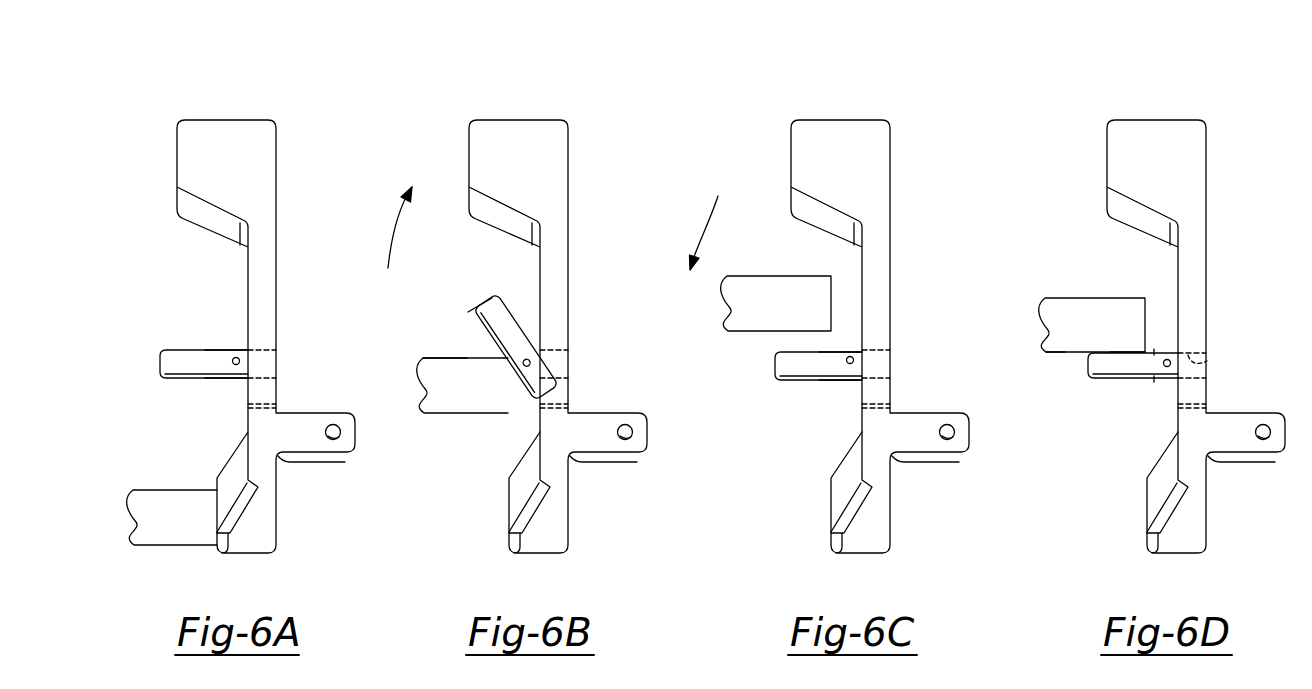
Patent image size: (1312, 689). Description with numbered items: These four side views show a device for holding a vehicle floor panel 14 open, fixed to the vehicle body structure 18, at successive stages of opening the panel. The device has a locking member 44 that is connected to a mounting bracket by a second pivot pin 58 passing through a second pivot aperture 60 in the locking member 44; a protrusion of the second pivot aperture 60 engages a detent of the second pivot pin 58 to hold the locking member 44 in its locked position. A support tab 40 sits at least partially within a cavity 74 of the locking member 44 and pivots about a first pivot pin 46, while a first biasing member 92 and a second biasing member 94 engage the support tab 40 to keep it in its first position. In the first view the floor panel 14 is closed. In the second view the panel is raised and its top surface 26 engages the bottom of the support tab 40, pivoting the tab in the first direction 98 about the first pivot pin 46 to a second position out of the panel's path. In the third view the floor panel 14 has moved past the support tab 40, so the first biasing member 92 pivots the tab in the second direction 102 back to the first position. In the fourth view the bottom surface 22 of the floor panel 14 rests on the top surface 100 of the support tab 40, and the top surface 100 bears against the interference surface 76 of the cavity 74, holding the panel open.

In FIG. 6A, the floor panel 14 is at (162, 500).
In FIG. 6B, the floor panel 14 is at (428, 379).
In FIG. 6C, the floor panel 14 is at (747, 303).
In FIG. 6D, the floor panel 14 is at (1064, 325).
In FIG. 6B, the body structure 18 is at (456, 278).
In FIG. 6D, the bottom surface 22 is at (1048, 410).
In FIG. 6B, the top surface 26 is at (439, 325).
In FIG. 6A, the support tab 40 is at (163, 366).
In FIG. 6B, the support tab 40 is at (541, 337).
In FIG. 6C, the support tab 40 is at (782, 363).
In FIG. 6D, the support tab 40 is at (1133, 429).
In FIG. 6A, the locking member 44 is at (227, 127).
In FIG. 6B, the locking member 44 is at (558, 298).
In FIG. 6C, the locking member 44 is at (880, 298).
In FIG. 6D, the locking member 44 is at (1196, 298).
In FIG. 6C, the first pivot pin 46 is at (887, 315).
In FIG. 6A, the second pivot pin 58 is at (340, 425).
In FIG. 6B, the second pivot pin 58 is at (654, 420).
In FIG. 6C, the second pivot pin 58 is at (976, 420).
In FIG. 6D, the second pivot pin 58 is at (1254, 400).
In FIG. 6A, the second pivot aperture 60 is at (338, 441).
In FIG. 6B, the second pivot aperture 60 is at (654, 468).
In FIG. 6C, the second pivot aperture 60 is at (976, 468).
In FIG. 6D, the second pivot aperture 60 is at (1276, 478).
In FIG. 6D, the cavity 74 is at (1158, 411).
In FIG. 6D, the interference surface 76 is at (1232, 347).
In FIG. 6A, the first biasing member 92 is at (225, 349).
In FIG. 6C, the first biasing member 92 is at (840, 295).
In FIG. 6A, the second biasing member 94 is at (225, 379).
In FIG. 6C, the second biasing member 94 is at (880, 390).
In FIG. 6B, the first direction 98 is at (374, 222).
In FIG. 6D, the top surface 100 is at (1116, 296).
In FIG. 6C, the second direction 102 is at (675, 220).